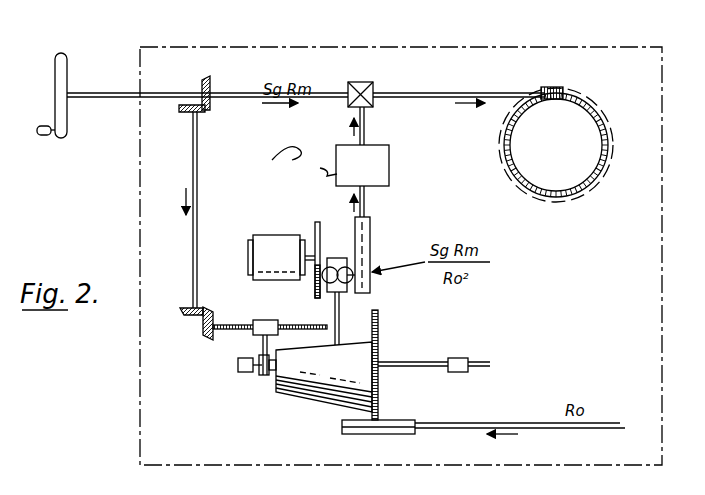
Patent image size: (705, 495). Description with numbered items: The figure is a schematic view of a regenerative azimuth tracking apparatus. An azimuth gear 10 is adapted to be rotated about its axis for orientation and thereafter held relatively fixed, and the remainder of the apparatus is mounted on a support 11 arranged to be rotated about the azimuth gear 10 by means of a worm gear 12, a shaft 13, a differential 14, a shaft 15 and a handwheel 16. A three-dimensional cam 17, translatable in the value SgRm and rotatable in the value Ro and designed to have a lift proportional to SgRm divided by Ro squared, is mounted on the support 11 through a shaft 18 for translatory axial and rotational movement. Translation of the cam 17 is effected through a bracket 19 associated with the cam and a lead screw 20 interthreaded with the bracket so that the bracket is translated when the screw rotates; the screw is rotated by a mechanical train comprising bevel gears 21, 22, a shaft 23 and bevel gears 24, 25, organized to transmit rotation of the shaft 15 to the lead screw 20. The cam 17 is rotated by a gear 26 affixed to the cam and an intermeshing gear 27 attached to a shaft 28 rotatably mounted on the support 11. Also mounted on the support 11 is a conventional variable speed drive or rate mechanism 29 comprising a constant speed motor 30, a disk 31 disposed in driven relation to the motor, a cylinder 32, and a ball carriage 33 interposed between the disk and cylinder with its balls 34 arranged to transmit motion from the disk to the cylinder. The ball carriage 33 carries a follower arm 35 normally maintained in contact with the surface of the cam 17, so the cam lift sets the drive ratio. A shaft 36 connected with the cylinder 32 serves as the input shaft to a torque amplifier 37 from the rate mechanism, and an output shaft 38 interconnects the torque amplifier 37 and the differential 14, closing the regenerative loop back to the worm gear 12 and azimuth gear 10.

The azimuth gear 10 is at (611, 149).
The support 11 is at (522, 53).
The worm gear 12 is at (566, 93).
The shaft 13 is at (455, 93).
The differential 14 is at (371, 82).
The shaft 15 is at (117, 95).
The handwheel 16 is at (67, 63).
The three-dimensional cam 17 is at (301, 390).
The shaft 18 is at (431, 361).
The bracket 19 is at (253, 338).
The lead screw 20 is at (283, 325).
The bevel gear 21 is at (214, 310).
The bevel gear 22 is at (186, 317).
The shaft 23 is at (197, 256).
The bevel gear 24 is at (185, 115).
The bevel gear 25 is at (211, 90).
The gear 26 is at (379, 326).
The gear 27 is at (390, 434).
The shaft 28 is at (513, 422).
The rate mechanism 29 is at (336, 258).
The constant speed motor 30 is at (281, 257).
The disk 31 is at (313, 228).
The cylinder 32 is at (371, 250).
The ball carriage 33 is at (346, 293).
The balls 34 is at (314, 283).
The follower arm 35 is at (338, 331).
The shaft 36 is at (366, 207).
The torque amplifier 37 is at (390, 176).
The output shaft 38 is at (366, 134).